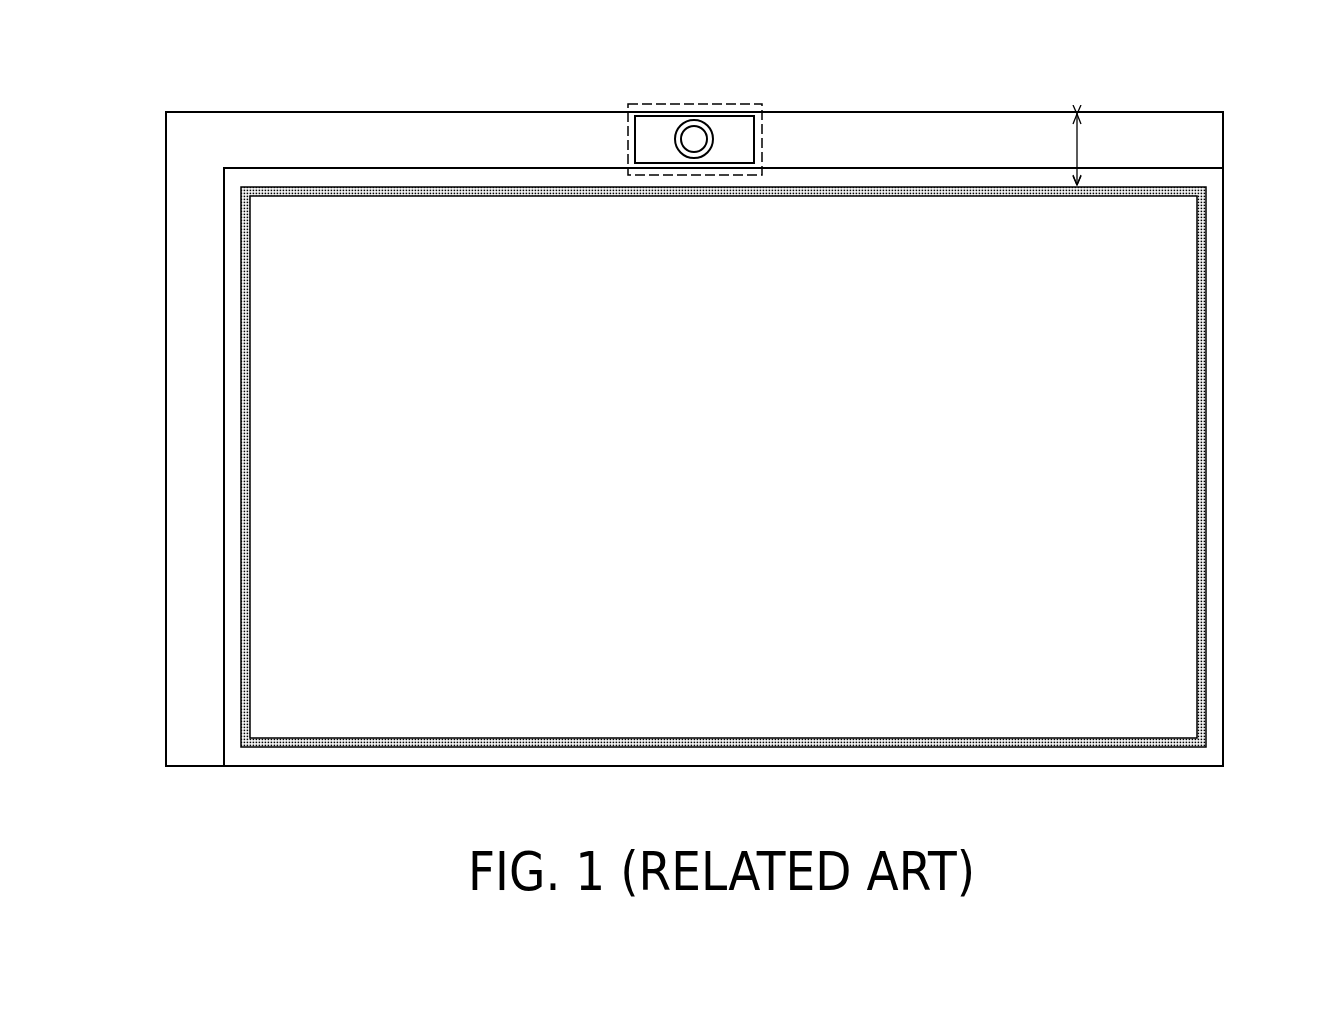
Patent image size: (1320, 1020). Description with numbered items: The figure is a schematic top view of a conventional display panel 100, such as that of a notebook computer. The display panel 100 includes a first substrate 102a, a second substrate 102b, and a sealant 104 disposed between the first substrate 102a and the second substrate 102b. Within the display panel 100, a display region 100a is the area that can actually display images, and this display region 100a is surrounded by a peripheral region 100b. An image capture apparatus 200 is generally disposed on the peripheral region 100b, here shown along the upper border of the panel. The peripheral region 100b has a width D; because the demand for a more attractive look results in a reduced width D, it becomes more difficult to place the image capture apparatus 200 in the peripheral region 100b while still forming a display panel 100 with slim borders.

The display panel 100 is at (620, 439).
The display region 100a is at (1147, 345).
The peripheral region 100b is at (1177, 147).
The first substrate 102a is at (190, 284).
The second substrate 102b is at (233, 332).
The sealant 104 is at (243, 386).
The image capture apparatus 200 is at (715, 102).
The width of the peripheral region D is at (1086, 149).